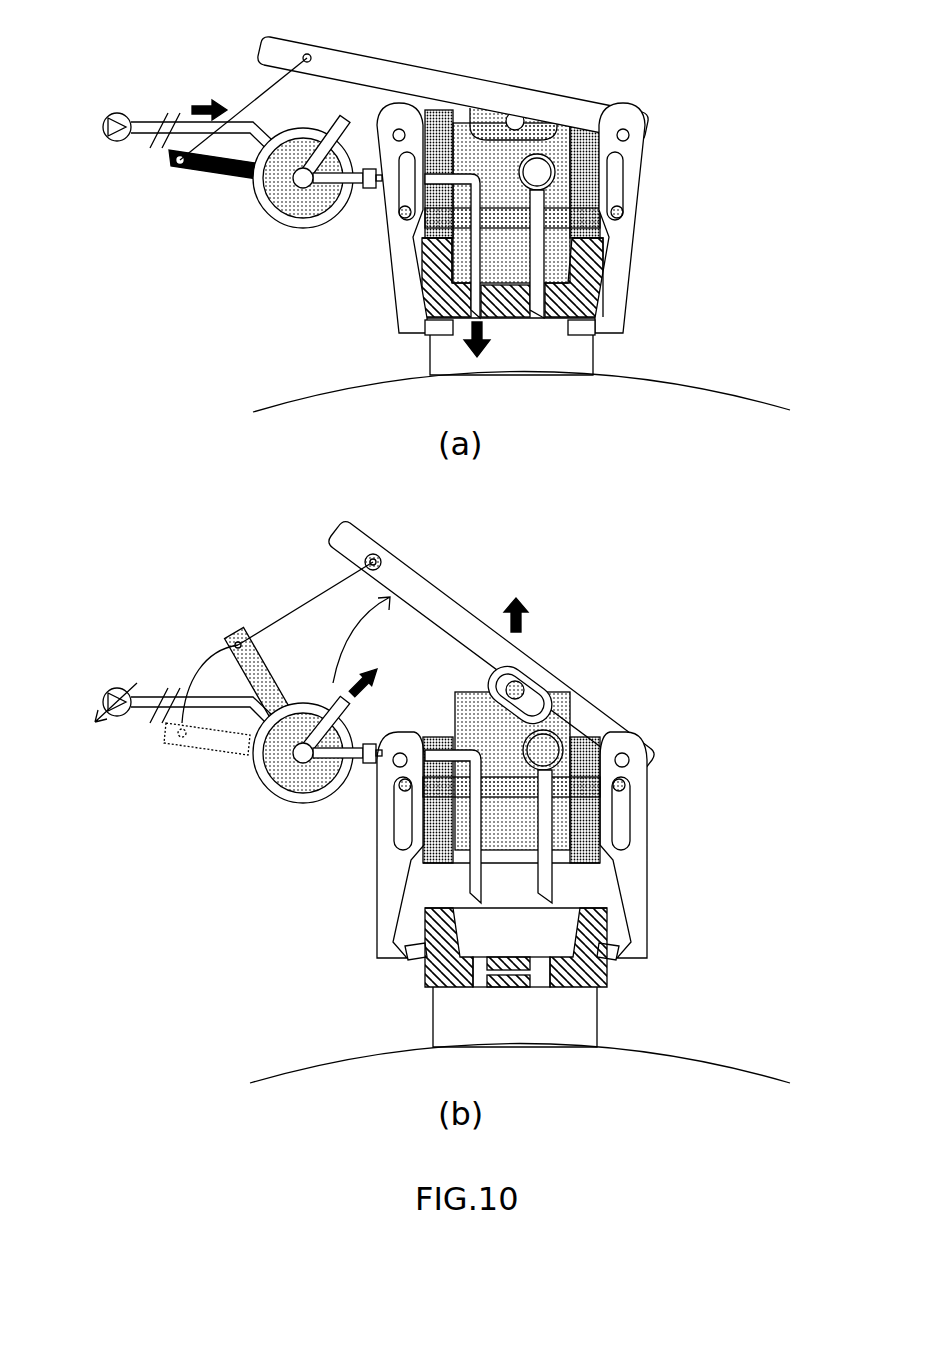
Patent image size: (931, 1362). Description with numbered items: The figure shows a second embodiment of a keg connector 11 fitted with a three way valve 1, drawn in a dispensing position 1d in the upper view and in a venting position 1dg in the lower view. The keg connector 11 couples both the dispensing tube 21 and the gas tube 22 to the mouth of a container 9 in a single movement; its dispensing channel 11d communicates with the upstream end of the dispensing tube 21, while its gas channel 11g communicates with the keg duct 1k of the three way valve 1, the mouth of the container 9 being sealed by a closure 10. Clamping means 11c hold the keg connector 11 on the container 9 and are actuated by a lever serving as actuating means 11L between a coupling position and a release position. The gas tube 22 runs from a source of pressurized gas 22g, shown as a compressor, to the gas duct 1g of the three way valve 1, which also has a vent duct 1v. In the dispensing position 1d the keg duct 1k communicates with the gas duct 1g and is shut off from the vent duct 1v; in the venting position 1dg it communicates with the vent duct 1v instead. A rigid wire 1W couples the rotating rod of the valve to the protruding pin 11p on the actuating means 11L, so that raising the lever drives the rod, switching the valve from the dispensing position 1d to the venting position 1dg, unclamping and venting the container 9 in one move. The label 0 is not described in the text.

The three way valve 1 is at (318, 228).
The dispensing position 1d is at (262, 420).
The venting position 1dg is at (196, 814).
The gas duct 1g is at (266, 148).
The keg duct 1k is at (363, 188).
The vent duct 1v is at (335, 135).
The rigid wire 1W is at (250, 102).
The container 9 is at (668, 383).
The closure 10 is at (600, 253).
The keg connector 11 is at (513, 496).
The clamping means 11c is at (408, 330).
The dispensing channel 11d is at (540, 273).
The gas channel 11g is at (425, 305).
The actuating means 11L is at (463, 90).
The coupling element 11p is at (310, 60).
The dispensing tube 21 is at (538, 148).
The gas tube 22 is at (152, 118).
The source of pressurized gas 22g is at (117, 145).
The origin direction 0 is at (82, 733).